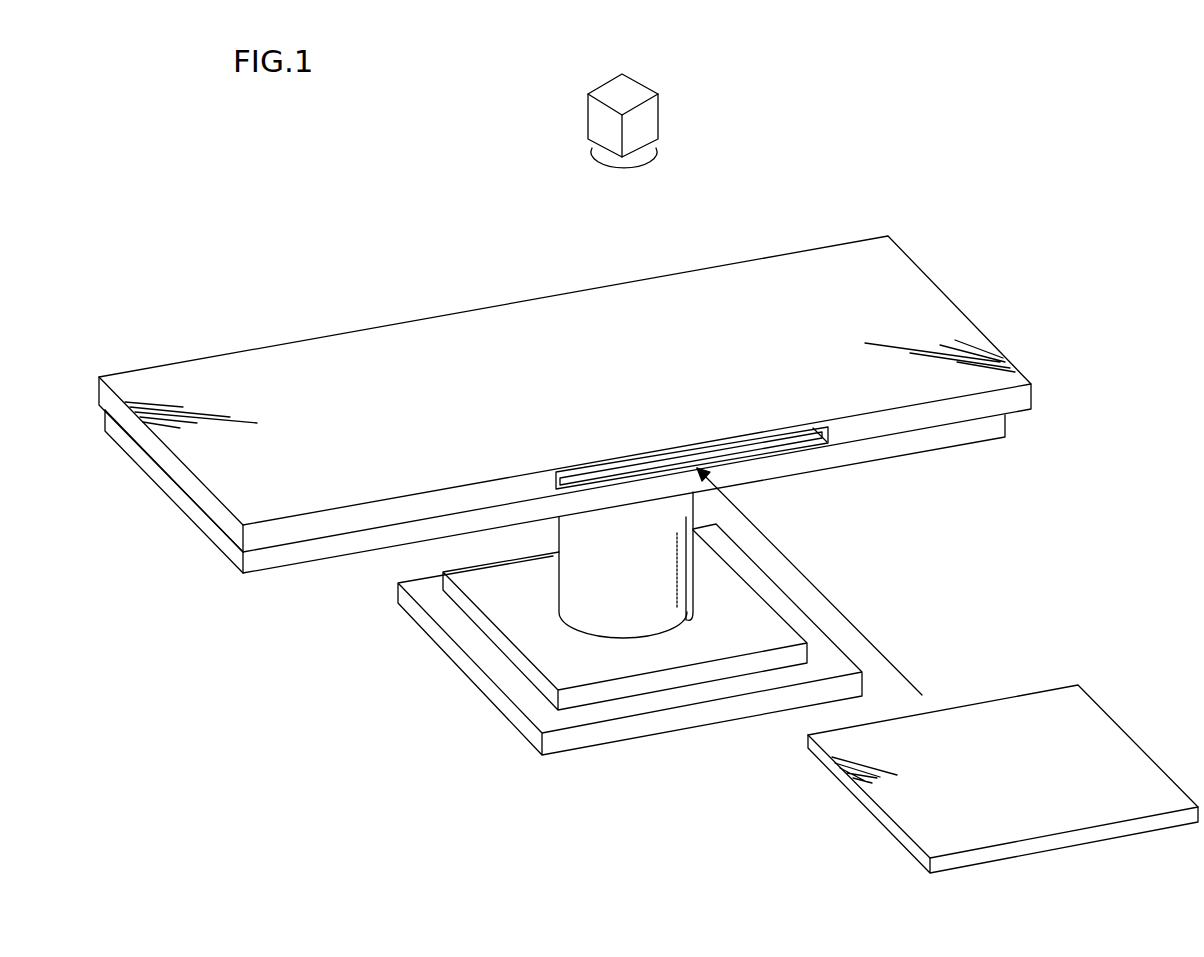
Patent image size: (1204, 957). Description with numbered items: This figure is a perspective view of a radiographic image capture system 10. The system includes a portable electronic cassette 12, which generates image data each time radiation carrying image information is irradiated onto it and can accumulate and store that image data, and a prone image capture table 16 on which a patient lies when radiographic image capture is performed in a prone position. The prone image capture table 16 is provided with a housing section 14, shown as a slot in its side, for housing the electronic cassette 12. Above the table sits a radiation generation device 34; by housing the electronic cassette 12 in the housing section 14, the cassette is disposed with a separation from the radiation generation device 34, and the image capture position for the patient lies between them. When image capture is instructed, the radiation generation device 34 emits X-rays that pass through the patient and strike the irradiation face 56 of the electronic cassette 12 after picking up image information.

The radiographic image capture system 10 is at (1142, 153).
The electronic cassette 12 is at (1098, 697).
The housing section 14 is at (783, 440).
The prone image capture table 16 is at (852, 263).
The radiation generation device 34 is at (650, 119).
The irradiation face 56 is at (1130, 753).